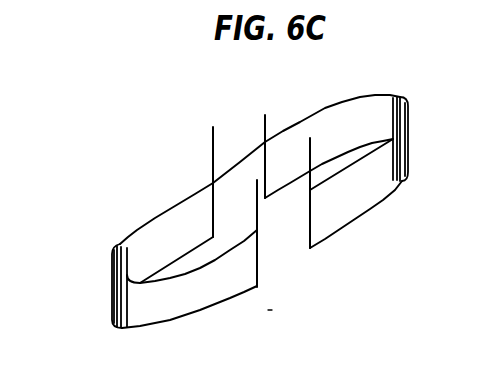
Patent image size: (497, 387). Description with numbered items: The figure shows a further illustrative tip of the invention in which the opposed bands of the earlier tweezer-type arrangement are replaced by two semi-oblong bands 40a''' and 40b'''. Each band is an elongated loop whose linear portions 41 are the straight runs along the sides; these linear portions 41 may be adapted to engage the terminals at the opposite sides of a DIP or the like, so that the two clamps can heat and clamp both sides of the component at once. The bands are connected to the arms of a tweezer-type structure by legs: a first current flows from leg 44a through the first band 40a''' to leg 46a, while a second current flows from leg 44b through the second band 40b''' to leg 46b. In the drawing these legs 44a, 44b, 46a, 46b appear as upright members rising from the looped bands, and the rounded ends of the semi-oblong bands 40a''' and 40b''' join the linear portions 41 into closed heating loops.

The linear portion 41 is at (148, 223).
The semi-oblong band 40a''' is at (82, 286).
The semi-oblong band 40b''' is at (436, 139).
The leg 44a is at (212, 158).
The leg 44b is at (264, 127).
The leg 46a is at (257, 181).
The leg 46b is at (309, 176).